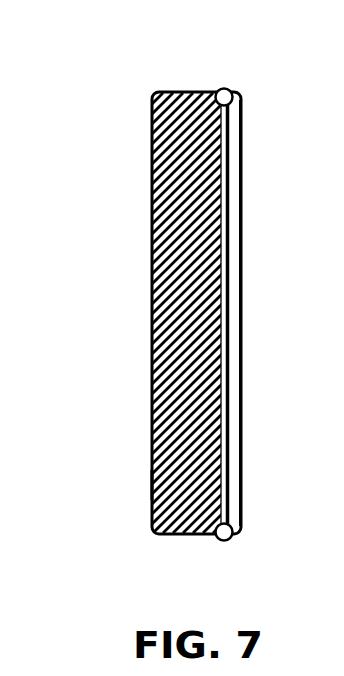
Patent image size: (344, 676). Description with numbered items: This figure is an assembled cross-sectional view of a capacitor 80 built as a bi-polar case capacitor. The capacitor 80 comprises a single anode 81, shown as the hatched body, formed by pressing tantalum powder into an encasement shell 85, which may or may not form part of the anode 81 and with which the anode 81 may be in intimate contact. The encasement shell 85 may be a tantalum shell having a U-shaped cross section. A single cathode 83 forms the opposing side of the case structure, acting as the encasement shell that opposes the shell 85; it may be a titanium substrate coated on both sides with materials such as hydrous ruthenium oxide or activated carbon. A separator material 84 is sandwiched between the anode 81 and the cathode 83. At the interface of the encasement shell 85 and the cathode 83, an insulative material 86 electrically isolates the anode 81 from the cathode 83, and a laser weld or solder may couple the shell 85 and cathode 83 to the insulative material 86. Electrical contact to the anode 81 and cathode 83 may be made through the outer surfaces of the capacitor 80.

The capacitor 80 is at (93, 170).
The anode 81 is at (162, 334).
The cathode 83 is at (241, 353).
The separator material 84 is at (231, 210).
The encasement shell 85 is at (150, 487).
The insulative material 86 is at (223, 88).